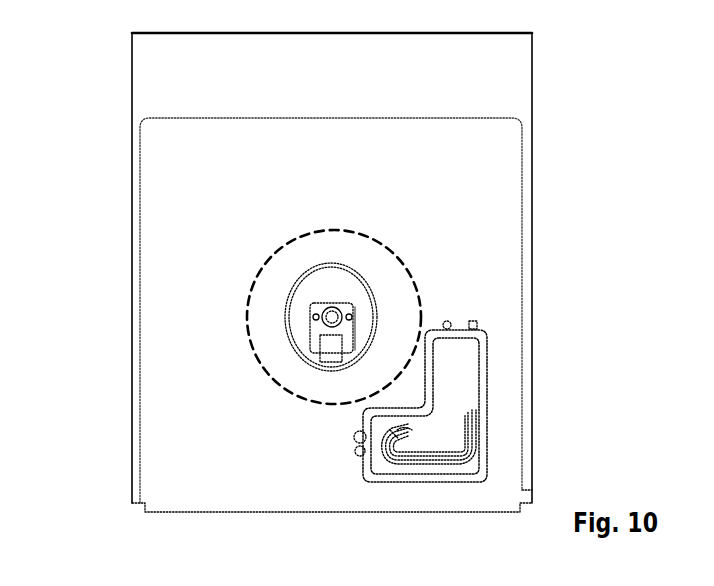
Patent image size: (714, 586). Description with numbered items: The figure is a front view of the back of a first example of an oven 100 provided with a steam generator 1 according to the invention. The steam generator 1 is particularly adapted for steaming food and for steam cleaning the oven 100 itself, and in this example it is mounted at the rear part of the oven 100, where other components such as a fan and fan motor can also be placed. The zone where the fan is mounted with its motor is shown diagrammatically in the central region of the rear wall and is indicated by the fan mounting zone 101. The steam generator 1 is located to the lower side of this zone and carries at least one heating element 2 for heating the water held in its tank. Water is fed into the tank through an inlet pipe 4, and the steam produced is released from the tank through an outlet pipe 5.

The oven 100 is at (126, 89).
The fan mounting zone 101 is at (249, 288).
The steam generator 1 is at (489, 410).
The heating element 2 is at (457, 448).
The inlet pipe 4 is at (360, 468).
The outlet pipe 5 is at (476, 323).